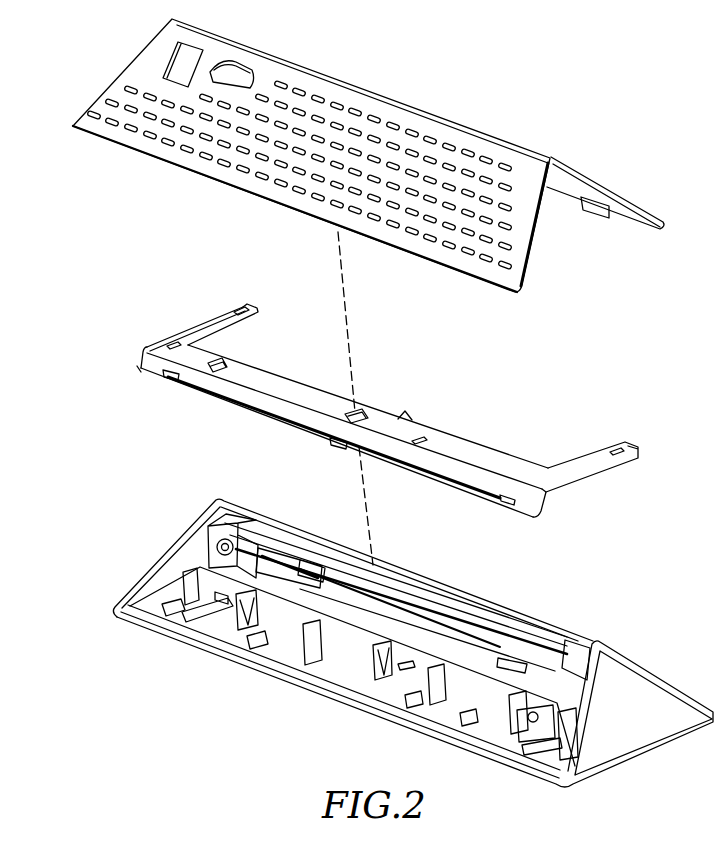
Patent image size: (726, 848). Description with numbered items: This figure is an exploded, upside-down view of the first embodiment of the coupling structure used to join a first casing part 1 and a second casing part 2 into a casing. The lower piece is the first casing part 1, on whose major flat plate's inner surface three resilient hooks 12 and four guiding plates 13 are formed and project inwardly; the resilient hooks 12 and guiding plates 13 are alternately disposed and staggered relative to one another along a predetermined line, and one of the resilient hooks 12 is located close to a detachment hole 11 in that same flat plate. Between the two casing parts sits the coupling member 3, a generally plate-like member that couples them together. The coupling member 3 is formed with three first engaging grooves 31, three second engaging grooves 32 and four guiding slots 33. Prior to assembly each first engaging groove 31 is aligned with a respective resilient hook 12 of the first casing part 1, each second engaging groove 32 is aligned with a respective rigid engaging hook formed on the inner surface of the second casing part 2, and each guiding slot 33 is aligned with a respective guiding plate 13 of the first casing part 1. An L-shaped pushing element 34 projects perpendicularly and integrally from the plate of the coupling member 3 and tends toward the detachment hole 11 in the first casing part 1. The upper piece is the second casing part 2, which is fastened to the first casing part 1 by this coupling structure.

The first casing part 1 is at (647, 745).
The second casing part 2 is at (489, 150).
The coupling member 3 is at (529, 459).
The detachment hole 11 is at (405, 664).
The resilient hook 12 is at (387, 677).
The guiding plate 13 is at (437, 706).
The first engaging groove 31 is at (363, 414).
The second engaging groove 32 is at (344, 450).
The guiding slot 33 is at (431, 440).
The L-shaped pushing element 34 is at (410, 422).